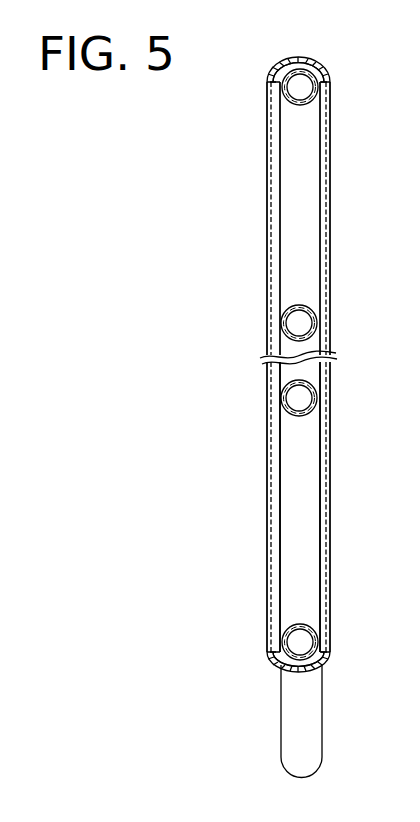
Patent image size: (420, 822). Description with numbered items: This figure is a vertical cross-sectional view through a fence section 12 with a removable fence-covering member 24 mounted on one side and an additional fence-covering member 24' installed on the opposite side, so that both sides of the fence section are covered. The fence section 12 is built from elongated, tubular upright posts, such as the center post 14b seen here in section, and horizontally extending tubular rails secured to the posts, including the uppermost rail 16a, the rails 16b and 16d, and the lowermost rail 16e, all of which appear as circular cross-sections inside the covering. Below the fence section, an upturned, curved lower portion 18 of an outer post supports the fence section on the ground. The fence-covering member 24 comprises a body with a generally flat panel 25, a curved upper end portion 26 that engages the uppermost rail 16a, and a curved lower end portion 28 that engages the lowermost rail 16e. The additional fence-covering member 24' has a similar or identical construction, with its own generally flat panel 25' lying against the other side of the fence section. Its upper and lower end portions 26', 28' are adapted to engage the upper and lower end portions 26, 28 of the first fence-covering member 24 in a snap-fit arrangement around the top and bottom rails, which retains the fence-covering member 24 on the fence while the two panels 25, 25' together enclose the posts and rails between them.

The fence section 12 is at (280, 186).
The center post 14b is at (290, 535).
The uppermost rail 16a is at (302, 107).
The rail 16b is at (291, 307).
The rail 16d is at (300, 417).
The lowermost rail 16e is at (300, 624).
The upturned, curved lower portion 18 is at (290, 744).
The removable fence-covering member 24 is at (348, 507).
The additional fence-covering member 24' is at (244, 507).
The generally flat panel 25 is at (348, 218).
The generally flat panel 25' is at (241, 218).
The curved upper end portion 26 is at (315, 55).
The curved upper end portion 26' is at (264, 62).
The curved lower end portion 28 is at (317, 677).
The curved lower end portion 28' is at (267, 686).